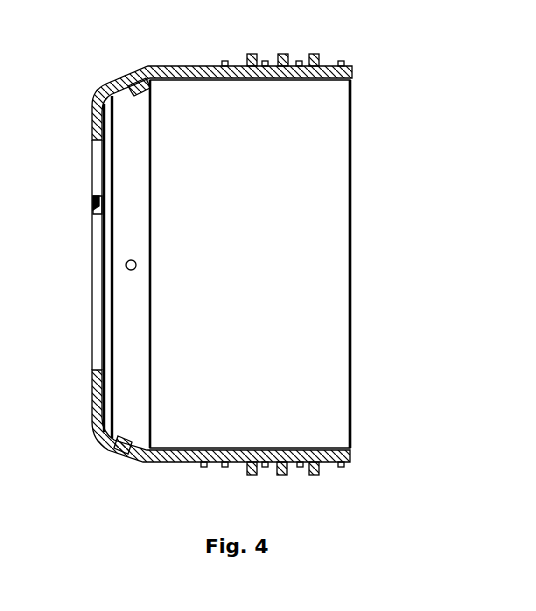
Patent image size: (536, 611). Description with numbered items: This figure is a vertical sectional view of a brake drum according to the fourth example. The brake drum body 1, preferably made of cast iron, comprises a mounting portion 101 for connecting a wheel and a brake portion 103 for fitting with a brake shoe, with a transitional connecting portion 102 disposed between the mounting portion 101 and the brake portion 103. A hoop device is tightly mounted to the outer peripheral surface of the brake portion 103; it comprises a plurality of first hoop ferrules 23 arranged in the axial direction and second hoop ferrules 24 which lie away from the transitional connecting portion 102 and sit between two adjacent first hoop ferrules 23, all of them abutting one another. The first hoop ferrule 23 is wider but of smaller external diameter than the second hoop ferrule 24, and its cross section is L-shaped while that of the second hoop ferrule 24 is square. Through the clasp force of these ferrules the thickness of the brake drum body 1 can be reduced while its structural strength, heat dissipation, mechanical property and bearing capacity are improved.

The brake drum body 1 is at (367, 230).
The mounting portion 101 is at (92, 290).
The transitional connecting portion 102 is at (118, 74).
The brake portion 103 is at (235, 450).
The first hoop ferrule 23 is at (213, 462).
The second hoop ferrule 24 is at (312, 475).